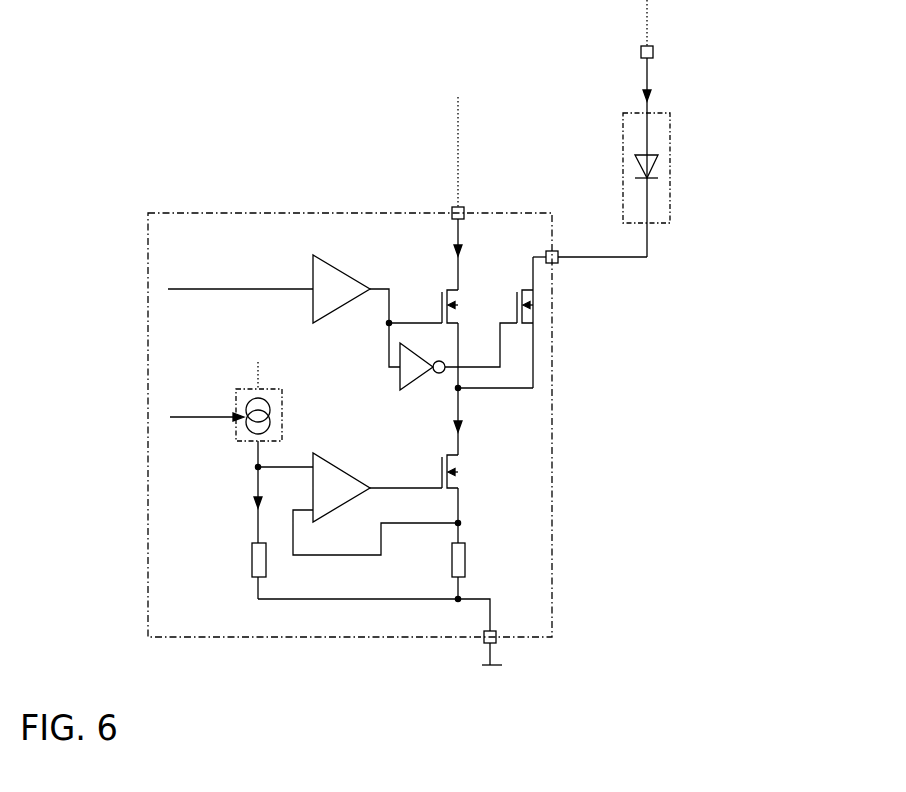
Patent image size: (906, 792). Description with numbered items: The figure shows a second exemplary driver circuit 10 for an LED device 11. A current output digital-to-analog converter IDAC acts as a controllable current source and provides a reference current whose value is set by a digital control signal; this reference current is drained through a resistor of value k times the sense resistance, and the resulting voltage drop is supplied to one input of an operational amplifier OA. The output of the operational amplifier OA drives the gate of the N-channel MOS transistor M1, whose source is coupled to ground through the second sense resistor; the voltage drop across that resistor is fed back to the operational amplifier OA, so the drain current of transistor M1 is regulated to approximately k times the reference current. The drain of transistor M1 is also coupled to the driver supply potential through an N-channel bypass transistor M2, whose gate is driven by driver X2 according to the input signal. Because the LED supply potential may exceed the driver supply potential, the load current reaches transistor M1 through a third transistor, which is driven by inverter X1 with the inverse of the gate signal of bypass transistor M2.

The driver circuit 10 is at (371, 380).
The LED device 11 is at (676, 128).
The driver X2 is at (358, 280).
The inverter X1 is at (413, 371).
The MOS transistor M1 is at (465, 479).
The bypass transistor M2 is at (465, 319).
The operational amplifier OA is at (345, 487).
The current output digital-to-analog converter IDAC is at (283, 415).